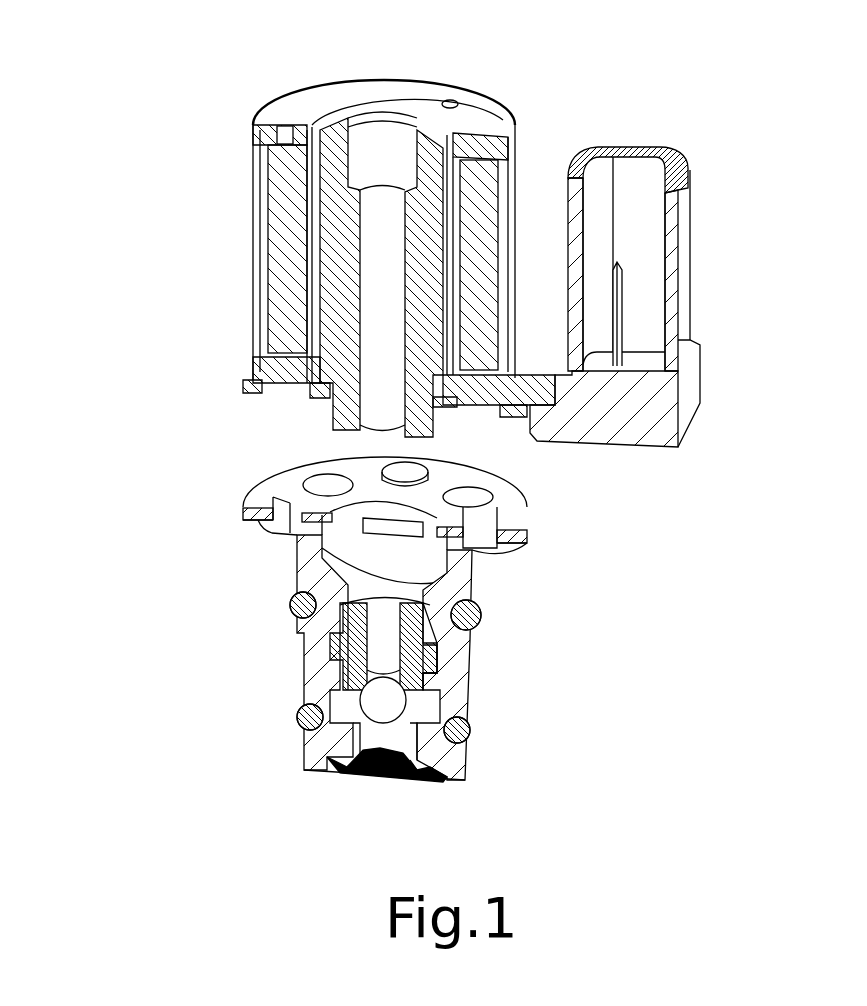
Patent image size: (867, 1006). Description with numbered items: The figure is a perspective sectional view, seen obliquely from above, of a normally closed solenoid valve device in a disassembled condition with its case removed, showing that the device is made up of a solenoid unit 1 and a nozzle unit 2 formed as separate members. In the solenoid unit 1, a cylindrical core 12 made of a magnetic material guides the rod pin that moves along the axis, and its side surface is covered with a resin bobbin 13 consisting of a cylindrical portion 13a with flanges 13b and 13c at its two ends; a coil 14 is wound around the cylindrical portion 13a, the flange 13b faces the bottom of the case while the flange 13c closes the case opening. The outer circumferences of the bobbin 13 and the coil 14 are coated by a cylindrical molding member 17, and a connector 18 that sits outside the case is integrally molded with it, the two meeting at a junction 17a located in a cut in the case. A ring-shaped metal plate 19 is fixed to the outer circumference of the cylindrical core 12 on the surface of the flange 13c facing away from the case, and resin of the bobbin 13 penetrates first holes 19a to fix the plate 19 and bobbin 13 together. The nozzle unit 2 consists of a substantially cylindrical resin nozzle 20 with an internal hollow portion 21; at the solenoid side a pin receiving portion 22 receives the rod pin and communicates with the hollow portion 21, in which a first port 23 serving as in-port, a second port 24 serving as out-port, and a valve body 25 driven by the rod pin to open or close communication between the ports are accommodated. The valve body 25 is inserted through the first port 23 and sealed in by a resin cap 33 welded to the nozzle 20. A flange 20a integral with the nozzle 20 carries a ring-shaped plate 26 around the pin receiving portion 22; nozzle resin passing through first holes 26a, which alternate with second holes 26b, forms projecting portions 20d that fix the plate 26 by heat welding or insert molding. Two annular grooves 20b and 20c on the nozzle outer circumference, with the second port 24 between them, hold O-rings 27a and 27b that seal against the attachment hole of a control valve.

The solenoid unit 1 is at (150, 137).
The nozzle unit 2 is at (152, 603).
The cylindrical core 12 is at (380, 128).
The bobbin 13 is at (272, 137).
The cylindrical portion 13a is at (312, 197).
The flange 13b is at (330, 93).
The flange 13c is at (260, 362).
The coil 14 is at (283, 177).
The molding member 17 is at (257, 257).
The junction 17a is at (553, 353).
The connector 18 is at (690, 257).
The plate 19 is at (245, 388).
The first holes 19a is at (273, 393).
The nozzle 20 is at (470, 586).
The flange 20a is at (283, 533).
The annular groove 20b is at (467, 652).
The annular groove 20c is at (467, 760).
The projecting portion 20d is at (278, 488).
The hollow portion 21 is at (385, 625).
The pin receiving portion 22 is at (353, 560).
The first port 23 is at (372, 745).
The second port 24 is at (435, 660).
The valve body 25 is at (395, 705).
The plate 26 is at (243, 509).
The first holes 26a is at (264, 525).
The second holes 26b is at (507, 520).
The O-ring 27a is at (290, 615).
The O-ring 27b is at (297, 720).
The resin cap 33 is at (440, 790).